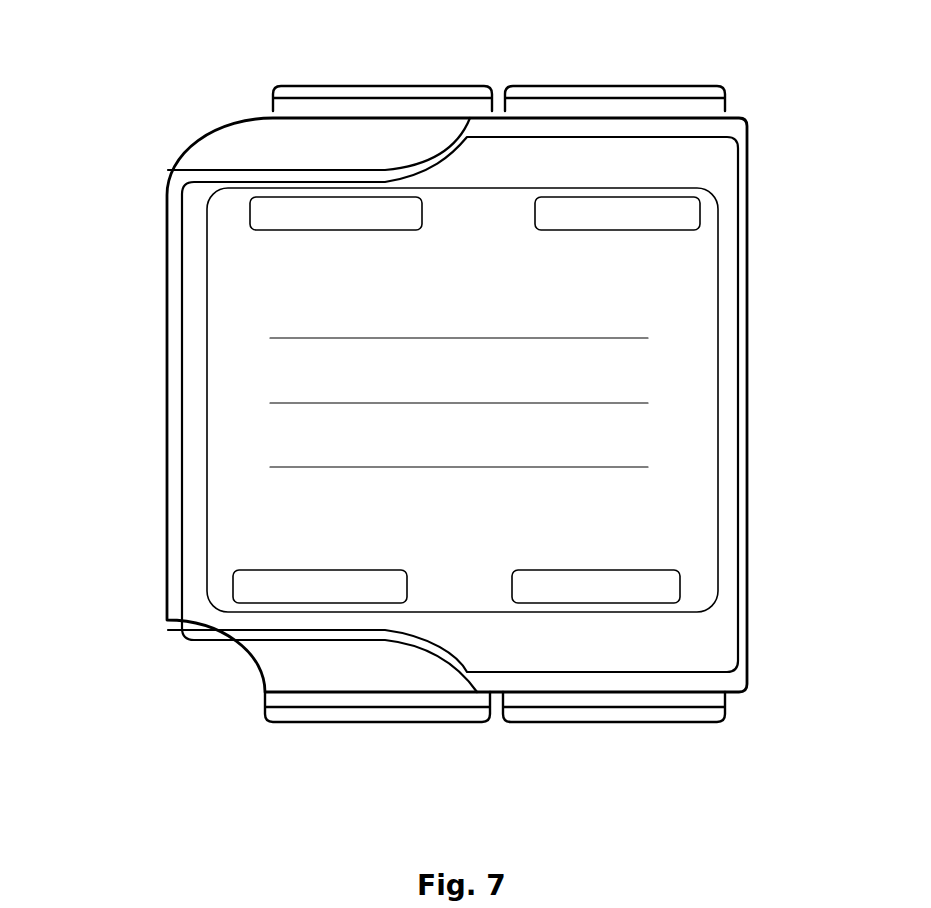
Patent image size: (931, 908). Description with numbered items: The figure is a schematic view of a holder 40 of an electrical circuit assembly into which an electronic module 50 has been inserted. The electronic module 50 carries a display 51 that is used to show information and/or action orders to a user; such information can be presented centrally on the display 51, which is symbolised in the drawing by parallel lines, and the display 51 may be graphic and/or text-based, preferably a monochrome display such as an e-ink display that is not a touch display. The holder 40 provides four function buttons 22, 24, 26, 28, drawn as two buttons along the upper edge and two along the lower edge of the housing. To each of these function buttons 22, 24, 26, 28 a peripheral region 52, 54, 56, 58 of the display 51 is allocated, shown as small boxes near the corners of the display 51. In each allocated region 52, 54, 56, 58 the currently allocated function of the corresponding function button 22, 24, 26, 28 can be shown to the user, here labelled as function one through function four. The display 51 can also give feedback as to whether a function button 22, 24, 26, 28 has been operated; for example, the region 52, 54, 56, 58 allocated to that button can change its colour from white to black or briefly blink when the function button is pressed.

The function button 22 is at (372, 96).
The function button 24 is at (616, 98).
The function button 26 is at (370, 713).
The function button 28 is at (614, 712).
The holder 40 is at (240, 675).
The electronic module 50 is at (193, 458).
The display 51 is at (673, 520).
The peripheral region 52 is at (272, 214).
The peripheral region 54 is at (562, 218).
The peripheral region 56 is at (287, 597).
The peripheral region 58 is at (555, 602).